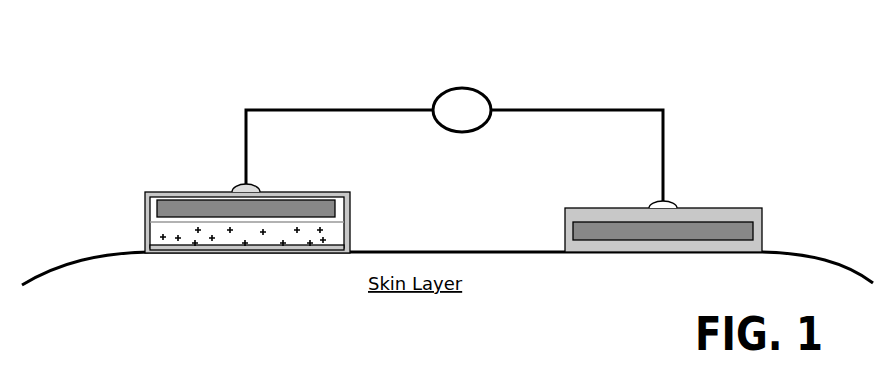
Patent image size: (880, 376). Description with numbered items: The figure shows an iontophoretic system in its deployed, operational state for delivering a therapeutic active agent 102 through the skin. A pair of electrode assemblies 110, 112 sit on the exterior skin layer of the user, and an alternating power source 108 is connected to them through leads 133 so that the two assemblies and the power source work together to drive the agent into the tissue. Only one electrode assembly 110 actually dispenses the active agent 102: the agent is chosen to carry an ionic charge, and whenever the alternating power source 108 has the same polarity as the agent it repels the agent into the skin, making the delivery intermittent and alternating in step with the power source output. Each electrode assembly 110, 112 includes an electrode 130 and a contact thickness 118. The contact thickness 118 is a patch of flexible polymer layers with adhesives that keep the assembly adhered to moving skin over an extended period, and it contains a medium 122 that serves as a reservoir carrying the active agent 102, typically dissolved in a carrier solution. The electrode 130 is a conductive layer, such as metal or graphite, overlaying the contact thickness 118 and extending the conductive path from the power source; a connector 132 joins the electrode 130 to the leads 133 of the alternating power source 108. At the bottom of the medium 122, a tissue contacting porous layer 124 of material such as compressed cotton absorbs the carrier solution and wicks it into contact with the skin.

The active agent 102 is at (197, 232).
The alternating power source 108 is at (460, 88).
The electrode assembly 110 is at (180, 160).
The electrode assembly 112 is at (722, 172).
The contact thickness 118 is at (368, 221).
The medium 122 is at (142, 222).
The porous layer 124 is at (167, 247).
The electrode 130 is at (300, 208).
The connector 132 is at (238, 188).
The leads 133 is at (277, 110).